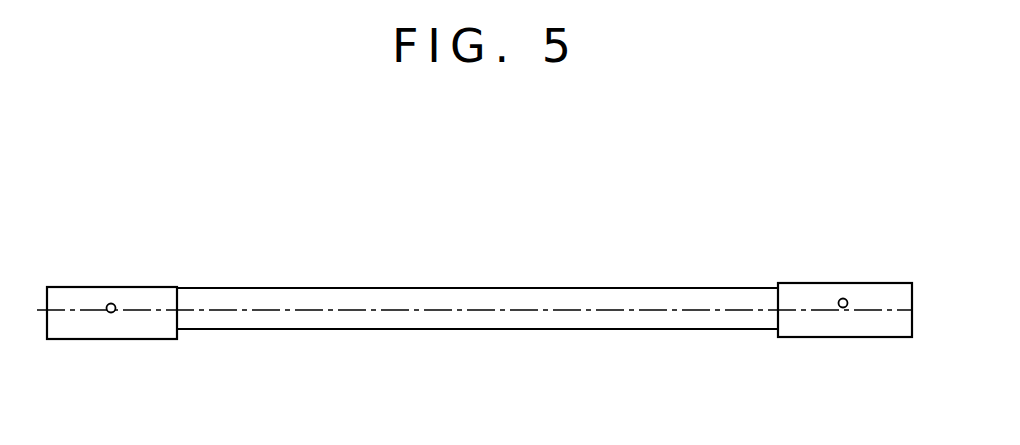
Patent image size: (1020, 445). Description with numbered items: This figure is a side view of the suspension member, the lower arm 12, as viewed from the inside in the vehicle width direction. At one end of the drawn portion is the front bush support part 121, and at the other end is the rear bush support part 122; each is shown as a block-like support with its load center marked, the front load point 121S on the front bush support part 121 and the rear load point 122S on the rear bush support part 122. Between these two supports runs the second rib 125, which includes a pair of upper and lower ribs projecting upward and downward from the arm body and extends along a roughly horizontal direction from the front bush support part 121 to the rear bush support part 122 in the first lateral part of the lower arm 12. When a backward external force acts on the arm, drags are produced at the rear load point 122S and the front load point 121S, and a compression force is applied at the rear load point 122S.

The lower arm 12 is at (757, 209).
The front bush support part 121 is at (880, 325).
The front load point 121S is at (845, 298).
The rear bush support part 122 is at (85, 330).
The rear load point 122S is at (112, 303).
The second rib 125 is at (468, 288).